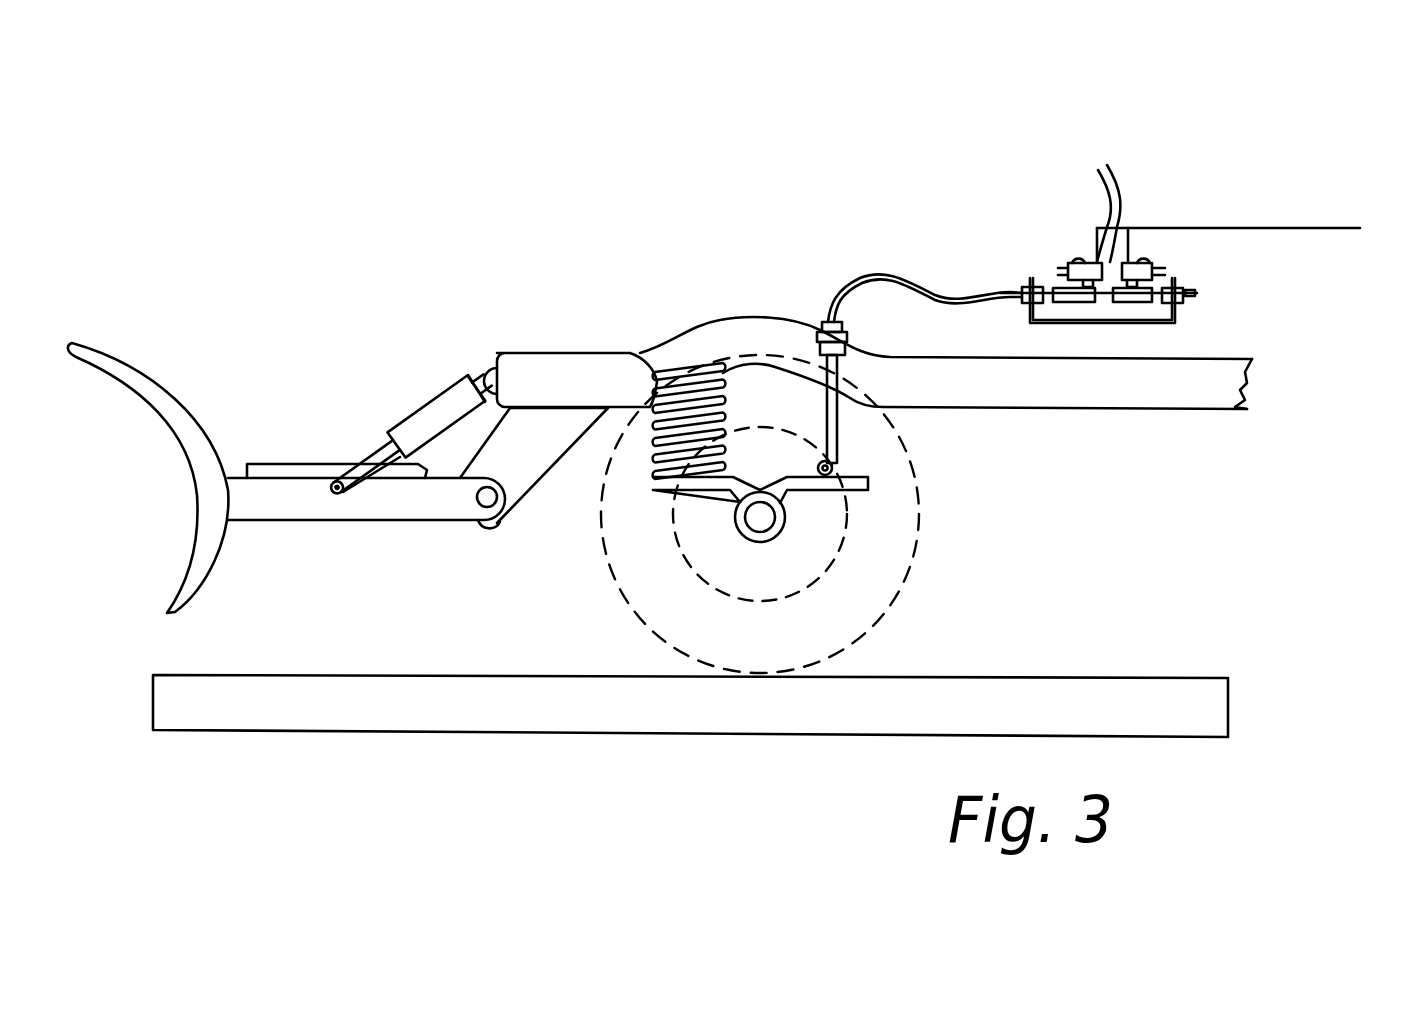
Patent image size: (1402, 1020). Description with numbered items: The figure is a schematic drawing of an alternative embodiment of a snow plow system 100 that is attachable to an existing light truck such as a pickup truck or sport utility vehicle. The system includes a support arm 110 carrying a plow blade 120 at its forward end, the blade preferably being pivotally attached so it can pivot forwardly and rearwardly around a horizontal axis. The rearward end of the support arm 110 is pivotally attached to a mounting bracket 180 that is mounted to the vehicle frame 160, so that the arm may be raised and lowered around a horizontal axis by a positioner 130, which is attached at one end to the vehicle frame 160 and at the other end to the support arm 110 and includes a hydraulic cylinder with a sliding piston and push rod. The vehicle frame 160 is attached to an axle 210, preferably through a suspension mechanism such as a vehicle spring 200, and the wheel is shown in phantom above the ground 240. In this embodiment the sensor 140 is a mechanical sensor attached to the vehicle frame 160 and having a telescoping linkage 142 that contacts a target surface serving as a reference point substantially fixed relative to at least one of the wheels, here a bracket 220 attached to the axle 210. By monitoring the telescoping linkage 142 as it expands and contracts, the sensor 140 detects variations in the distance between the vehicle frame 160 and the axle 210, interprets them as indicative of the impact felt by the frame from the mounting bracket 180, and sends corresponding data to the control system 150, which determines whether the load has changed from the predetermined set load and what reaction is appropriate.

The snow plow system 100 is at (205, 163).
The support arm 110 is at (353, 522).
The plow blade 120 is at (198, 512).
The positioner 130 is at (402, 420).
The sensor 140 is at (820, 323).
The telescoping linkage 142 is at (822, 410).
The control system 150 is at (1180, 231).
The vehicle frame 160 is at (1228, 359).
The mounting bracket 180 is at (518, 500).
The vehicle spring 200 is at (646, 375).
The axle 210 is at (786, 520).
The bracket 220 is at (866, 476).
The ground 240 is at (1118, 678).